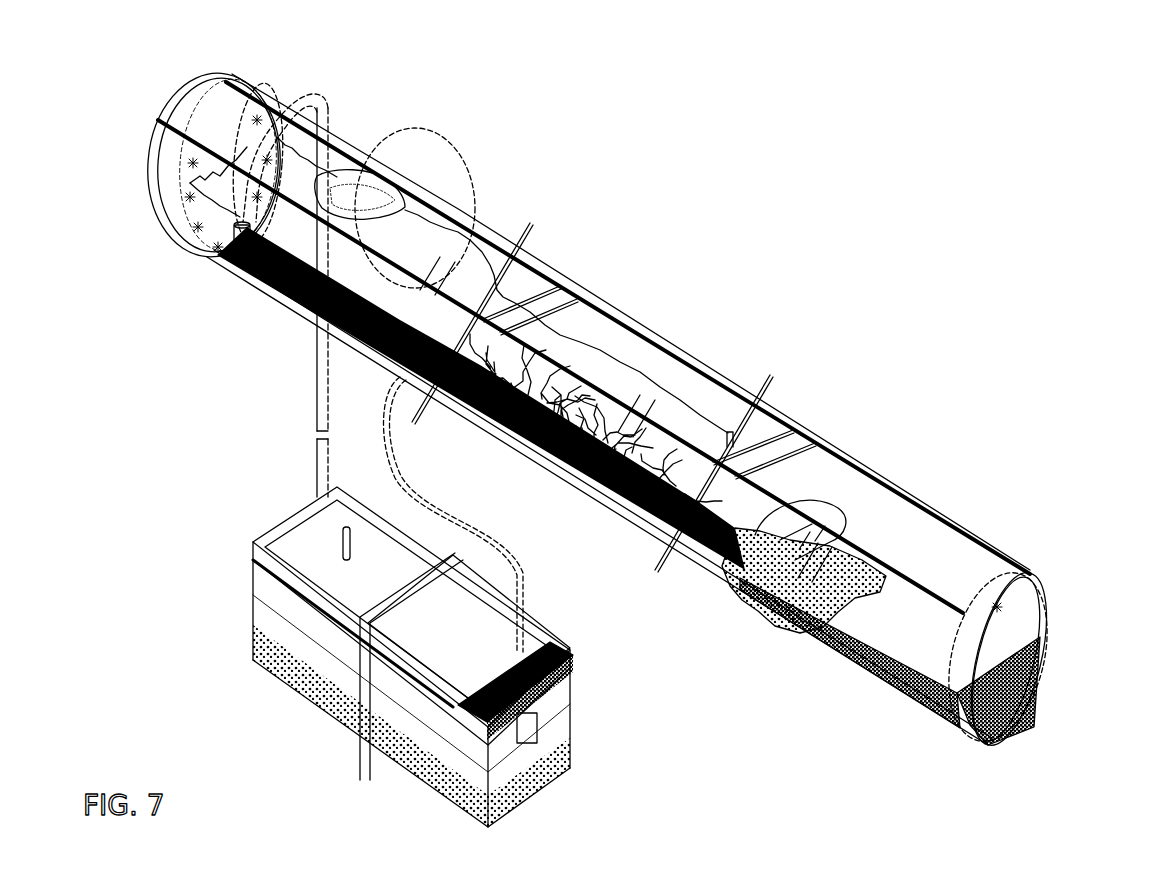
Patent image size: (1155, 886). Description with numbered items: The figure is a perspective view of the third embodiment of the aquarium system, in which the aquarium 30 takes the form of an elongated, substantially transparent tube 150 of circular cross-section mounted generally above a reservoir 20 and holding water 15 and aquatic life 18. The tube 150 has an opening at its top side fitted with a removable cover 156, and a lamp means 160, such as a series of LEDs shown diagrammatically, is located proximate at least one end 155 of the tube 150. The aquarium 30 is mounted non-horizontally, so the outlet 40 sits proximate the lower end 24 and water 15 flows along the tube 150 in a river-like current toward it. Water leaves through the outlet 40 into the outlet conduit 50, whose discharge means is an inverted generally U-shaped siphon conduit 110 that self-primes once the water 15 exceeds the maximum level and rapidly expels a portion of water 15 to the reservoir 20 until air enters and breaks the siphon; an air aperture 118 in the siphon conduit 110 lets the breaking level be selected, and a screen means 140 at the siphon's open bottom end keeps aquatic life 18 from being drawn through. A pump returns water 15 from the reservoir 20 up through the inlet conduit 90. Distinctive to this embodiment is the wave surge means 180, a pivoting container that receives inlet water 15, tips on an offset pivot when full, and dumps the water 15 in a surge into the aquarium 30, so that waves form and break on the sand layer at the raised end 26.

The water 15 is at (567, 332).
The aquatic life 18 is at (573, 437).
The reservoir 20 is at (558, 645).
The lower end 24 is at (200, 272).
The raised end 26 is at (910, 722).
The aquarium 30 is at (1040, 514).
The outlet 40 is at (277, 137).
The outlet conduit 50 is at (317, 393).
The inlet conduit 90 is at (525, 578).
The siphon conduit 110 is at (317, 102).
The air aperture 118 is at (240, 218).
The screen means 140 is at (777, 608).
The tube 150 is at (1033, 575).
The end of the tube 155 is at (537, 264).
The removable cover 156 is at (635, 348).
The lamp means 160 is at (253, 117).
The wave surge means 180 is at (373, 187).